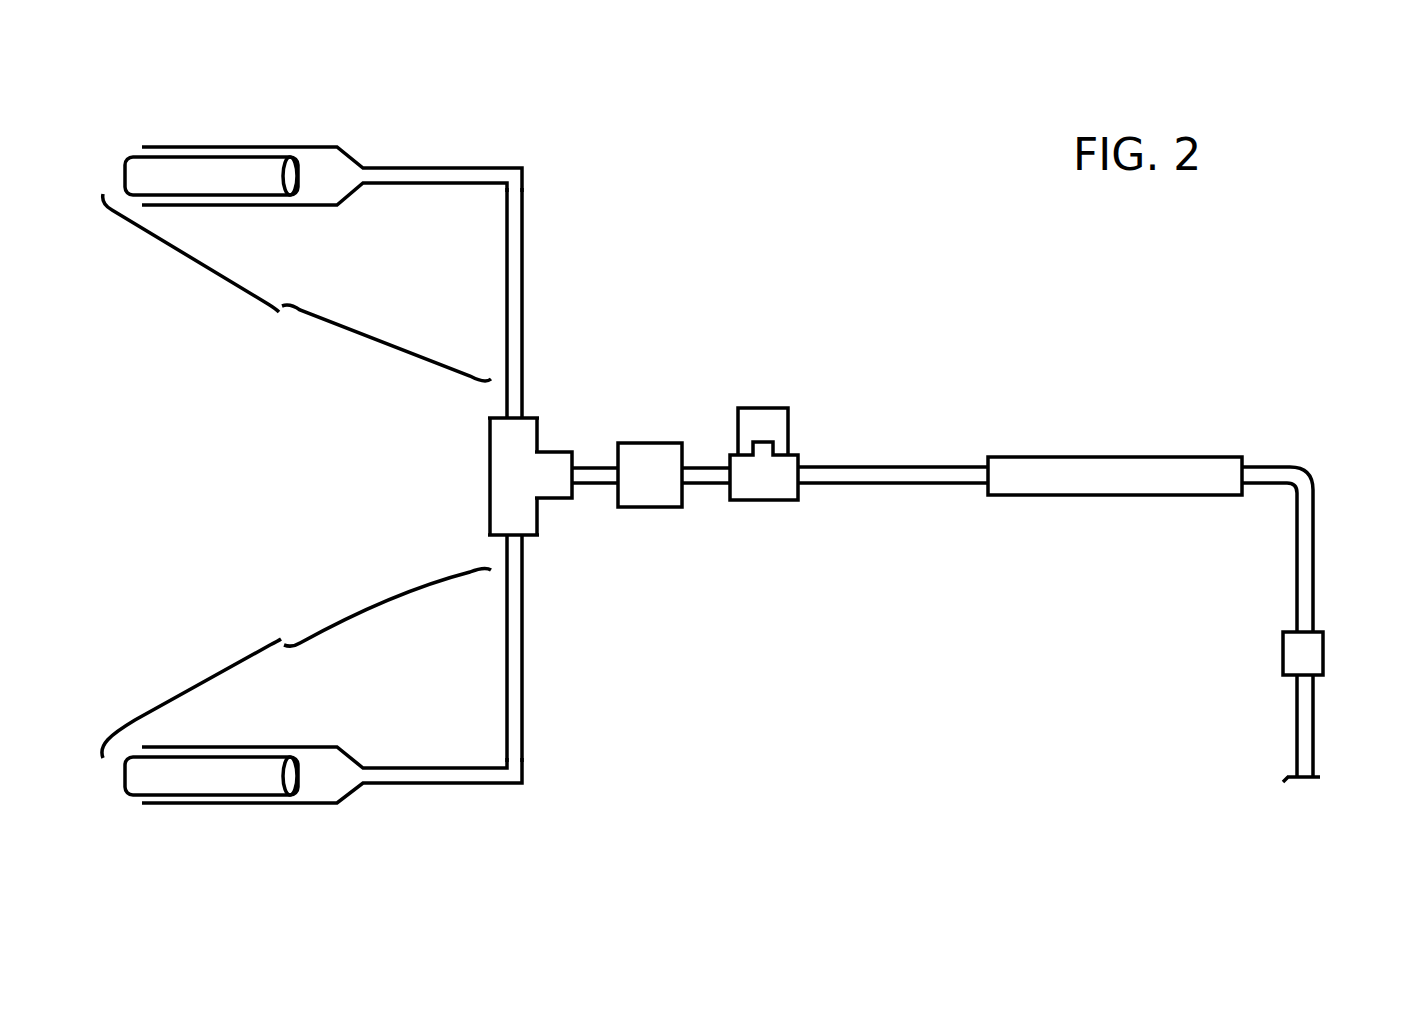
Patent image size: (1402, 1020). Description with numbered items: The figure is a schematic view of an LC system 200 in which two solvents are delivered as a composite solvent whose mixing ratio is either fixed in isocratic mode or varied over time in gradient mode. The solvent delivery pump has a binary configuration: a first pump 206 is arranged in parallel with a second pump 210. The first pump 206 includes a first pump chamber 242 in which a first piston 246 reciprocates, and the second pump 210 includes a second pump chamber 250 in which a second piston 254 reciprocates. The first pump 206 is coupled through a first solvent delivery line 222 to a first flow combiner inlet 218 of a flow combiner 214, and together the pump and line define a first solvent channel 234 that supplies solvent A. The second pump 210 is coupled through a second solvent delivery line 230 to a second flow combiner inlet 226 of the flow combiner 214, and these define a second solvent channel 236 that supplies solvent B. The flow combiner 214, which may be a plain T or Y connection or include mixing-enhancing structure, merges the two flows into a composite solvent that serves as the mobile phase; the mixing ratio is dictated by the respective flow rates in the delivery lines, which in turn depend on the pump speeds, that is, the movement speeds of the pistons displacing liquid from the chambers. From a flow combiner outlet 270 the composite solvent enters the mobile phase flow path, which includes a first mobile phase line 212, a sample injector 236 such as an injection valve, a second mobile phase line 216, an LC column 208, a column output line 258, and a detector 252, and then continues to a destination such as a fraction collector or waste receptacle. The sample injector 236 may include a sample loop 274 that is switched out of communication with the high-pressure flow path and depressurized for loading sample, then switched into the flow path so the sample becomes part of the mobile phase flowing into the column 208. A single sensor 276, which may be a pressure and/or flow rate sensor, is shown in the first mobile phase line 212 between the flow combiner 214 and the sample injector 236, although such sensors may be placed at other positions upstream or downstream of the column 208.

The LC system 200 is at (756, 148).
The first pump 206 is at (120, 100).
The second pump 210 is at (150, 842).
The first pump chamber 242 is at (322, 147).
The first piston 246 is at (203, 168).
The first solvent channel 234 is at (297, 287).
The second pump chamber 250 is at (318, 803).
The second piston 254 is at (198, 787).
The first solvent delivery line 222 is at (515, 313).
The second solvent delivery line 230 is at (513, 635).
The flow combiner 214 is at (498, 468).
The first flow combiner inlet 218 is at (503, 418).
The second flow combiner inlet 226 is at (495, 535).
The flow combiner outlet 270 is at (553, 483).
The first mobile phase line 212 is at (595, 460).
The sensor 276 is at (638, 507).
The sample injector 236 is at (758, 500).
The sample loop 274 is at (755, 408).
The second mobile phase line 216 is at (917, 465).
The LC column 208 is at (1090, 495).
The column output line 258 is at (1313, 518).
The detector 252 is at (1283, 640).